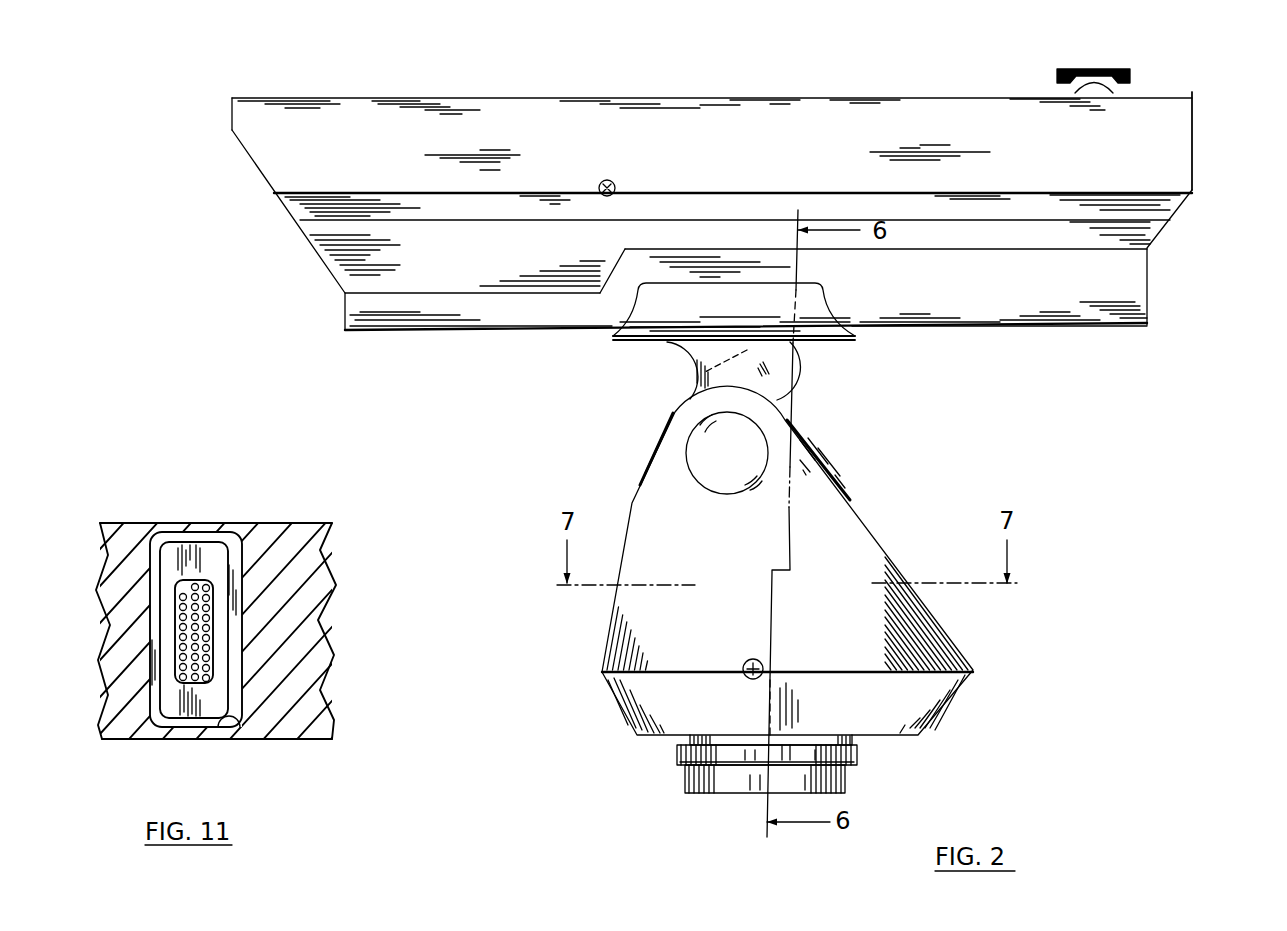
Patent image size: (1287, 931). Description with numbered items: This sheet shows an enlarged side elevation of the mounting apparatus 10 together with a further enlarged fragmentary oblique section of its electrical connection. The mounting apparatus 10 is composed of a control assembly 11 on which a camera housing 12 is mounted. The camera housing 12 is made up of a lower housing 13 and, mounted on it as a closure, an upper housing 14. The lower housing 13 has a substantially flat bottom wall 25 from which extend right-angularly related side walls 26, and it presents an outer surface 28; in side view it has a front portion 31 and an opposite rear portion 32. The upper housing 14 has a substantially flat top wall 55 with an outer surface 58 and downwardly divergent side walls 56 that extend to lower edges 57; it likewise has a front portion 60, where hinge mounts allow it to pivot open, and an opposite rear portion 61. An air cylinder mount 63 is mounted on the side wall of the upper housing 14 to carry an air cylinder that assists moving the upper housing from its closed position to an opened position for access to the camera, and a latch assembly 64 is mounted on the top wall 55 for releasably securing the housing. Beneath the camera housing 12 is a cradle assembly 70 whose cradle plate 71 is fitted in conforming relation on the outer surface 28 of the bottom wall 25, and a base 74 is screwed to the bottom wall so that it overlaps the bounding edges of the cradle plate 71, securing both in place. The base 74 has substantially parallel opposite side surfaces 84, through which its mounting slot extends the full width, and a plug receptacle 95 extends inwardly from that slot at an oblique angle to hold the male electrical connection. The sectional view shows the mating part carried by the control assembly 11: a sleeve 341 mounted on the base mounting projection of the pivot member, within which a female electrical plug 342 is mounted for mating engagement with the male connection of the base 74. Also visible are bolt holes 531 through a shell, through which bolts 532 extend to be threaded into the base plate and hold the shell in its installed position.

In FIG. 2, the mounting apparatus 10 is at (500, 401).
In FIG. 2, the control assembly 11 is at (738, 348).
In FIG. 2, the camera housing 12 is at (1148, 270).
In FIG. 2, the lower housing 13 is at (1000, 325).
In FIG. 2, the upper housing 14 is at (612, 97).
In FIG. 2, the bottom wall 25 is at (945, 328).
In FIG. 2, the side walls 26 is at (1098, 305).
In FIG. 2, the outer surface 28 is at (935, 285).
In FIG. 2, the front portion 31 is at (345, 330).
In FIG. 2, the rear portion 32 is at (1143, 312).
In FIG. 2, the top wall 55 is at (505, 97).
In FIG. 2, the side walls 56 is at (697, 182).
In FIG. 2, the lower edges 57 is at (998, 250).
In FIG. 2, the outer surface 58 is at (857, 118).
In FIG. 2, the front portion 60 is at (250, 158).
In FIG. 2, the rear portion 61 is at (1193, 143).
In FIG. 2, the air cylinder mount 63 is at (598, 185).
In FIG. 2, the latch assembly 64 is at (1115, 68).
In FIG. 2, the cradle assembly 70 is at (640, 364).
In FIG. 2, the cradle plate 71 is at (769, 311).
In FIG. 11, the base 74 is at (265, 523).
In FIG. 11, the side surfaces 84 is at (167, 532).
In FIG. 11, the plug receptacle 95 is at (232, 722).
In FIG. 11, the sleeve 341 is at (153, 687).
In FIG. 11, the female electrical plug 342 is at (193, 580).
In FIG. 2, the bolt holes 531 is at (745, 662).
In FIG. 2, the bolts 532 is at (746, 678).